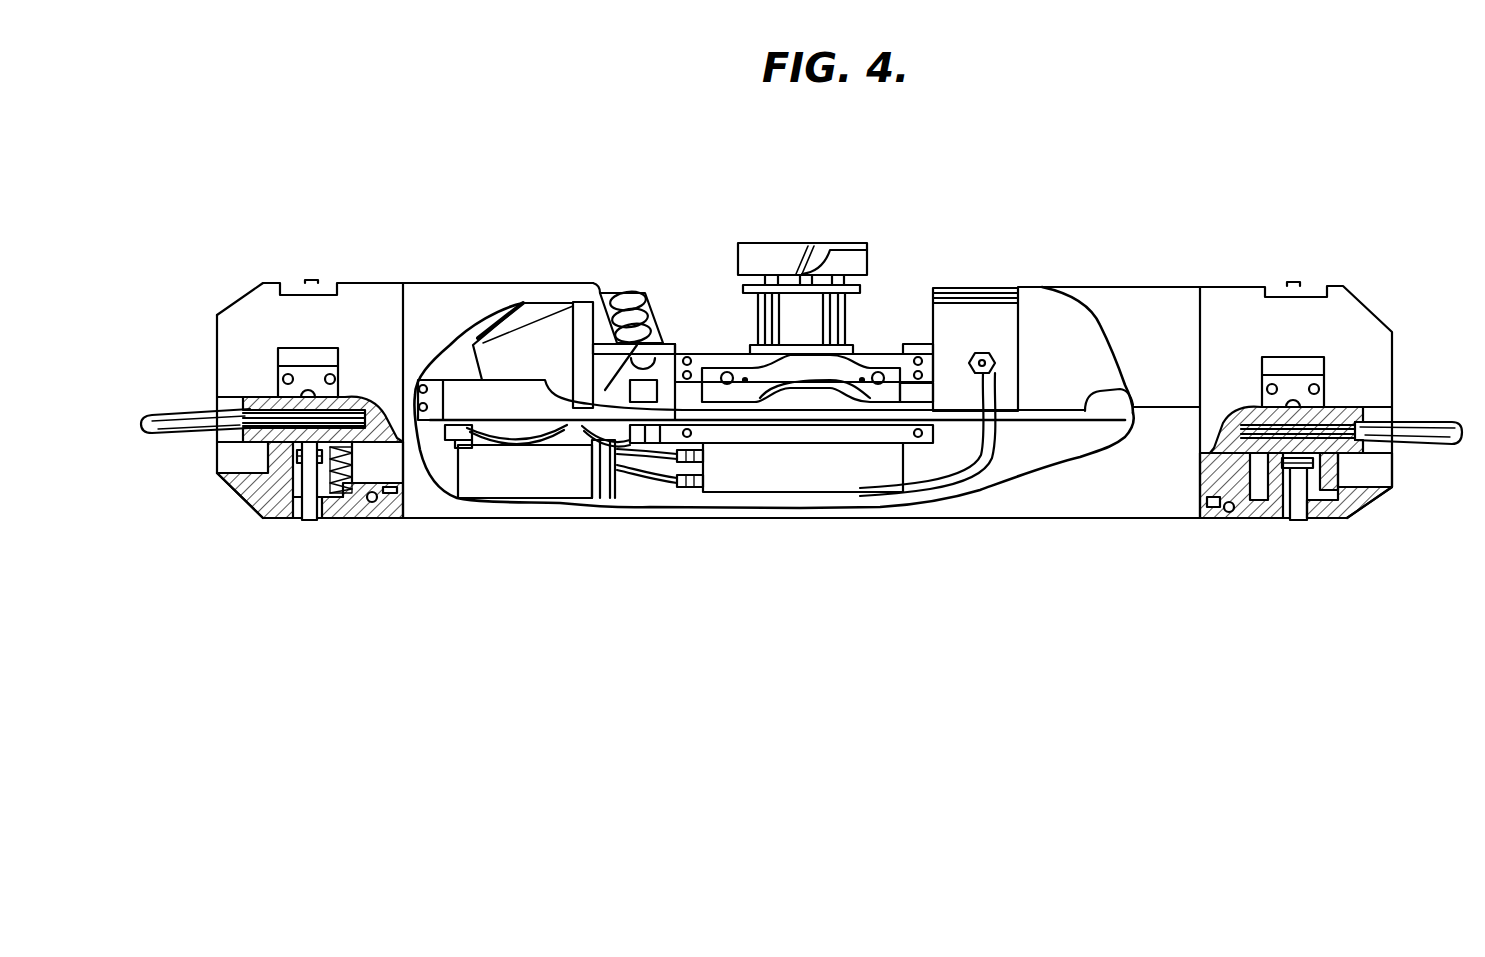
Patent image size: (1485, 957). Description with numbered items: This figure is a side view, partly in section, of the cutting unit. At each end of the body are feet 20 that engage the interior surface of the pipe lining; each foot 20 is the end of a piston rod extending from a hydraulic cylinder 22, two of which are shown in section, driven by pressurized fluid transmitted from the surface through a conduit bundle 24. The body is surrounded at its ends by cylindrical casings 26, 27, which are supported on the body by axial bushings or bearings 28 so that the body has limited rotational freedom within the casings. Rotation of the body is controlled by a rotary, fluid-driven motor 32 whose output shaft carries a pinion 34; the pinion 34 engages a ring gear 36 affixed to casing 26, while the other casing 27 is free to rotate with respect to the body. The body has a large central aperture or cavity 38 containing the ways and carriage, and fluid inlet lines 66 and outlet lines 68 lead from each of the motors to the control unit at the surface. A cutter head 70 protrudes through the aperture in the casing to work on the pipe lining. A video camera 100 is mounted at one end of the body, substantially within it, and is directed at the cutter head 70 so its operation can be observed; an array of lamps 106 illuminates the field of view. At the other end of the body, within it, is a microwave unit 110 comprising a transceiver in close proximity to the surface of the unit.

The foot 20 is at (310, 508).
The hydraulic cylinder 22 is at (295, 507).
The conduit bundle 24 is at (181, 434).
The cylindrical casing 26 is at (355, 298).
The cylindrical casing 27 is at (1348, 327).
The axial bushing 28 is at (385, 510).
The rotary fluid-driven motor 32 is at (520, 480).
The pinion 34 is at (352, 463).
The ring gear 36 is at (368, 408).
The central aperture 38 is at (893, 310).
The fluid inlet line 66 is at (686, 488).
The fluid outlet line 68 is at (642, 478).
The cutter head 70 is at (767, 260).
The video camera 100 is at (510, 362).
The array of lamps 106 is at (634, 318).
The microwave unit 110 is at (989, 343).